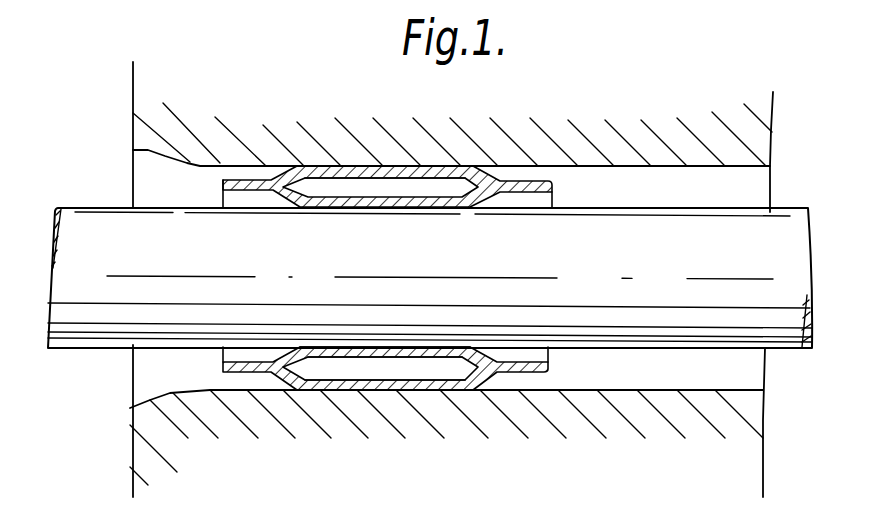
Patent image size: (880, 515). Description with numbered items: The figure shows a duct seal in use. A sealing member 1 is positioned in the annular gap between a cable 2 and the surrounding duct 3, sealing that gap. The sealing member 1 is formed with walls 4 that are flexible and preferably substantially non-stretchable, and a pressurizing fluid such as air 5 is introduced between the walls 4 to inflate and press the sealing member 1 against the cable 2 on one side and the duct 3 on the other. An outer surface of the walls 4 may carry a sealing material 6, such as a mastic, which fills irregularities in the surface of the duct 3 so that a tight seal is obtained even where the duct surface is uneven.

The sealing member 1 is at (223, 187).
The cable 2 is at (87, 227).
The duct 3 is at (293, 146).
The walls 4 is at (329, 391).
The air 5 is at (452, 370).
The sealing material 6 is at (368, 168).